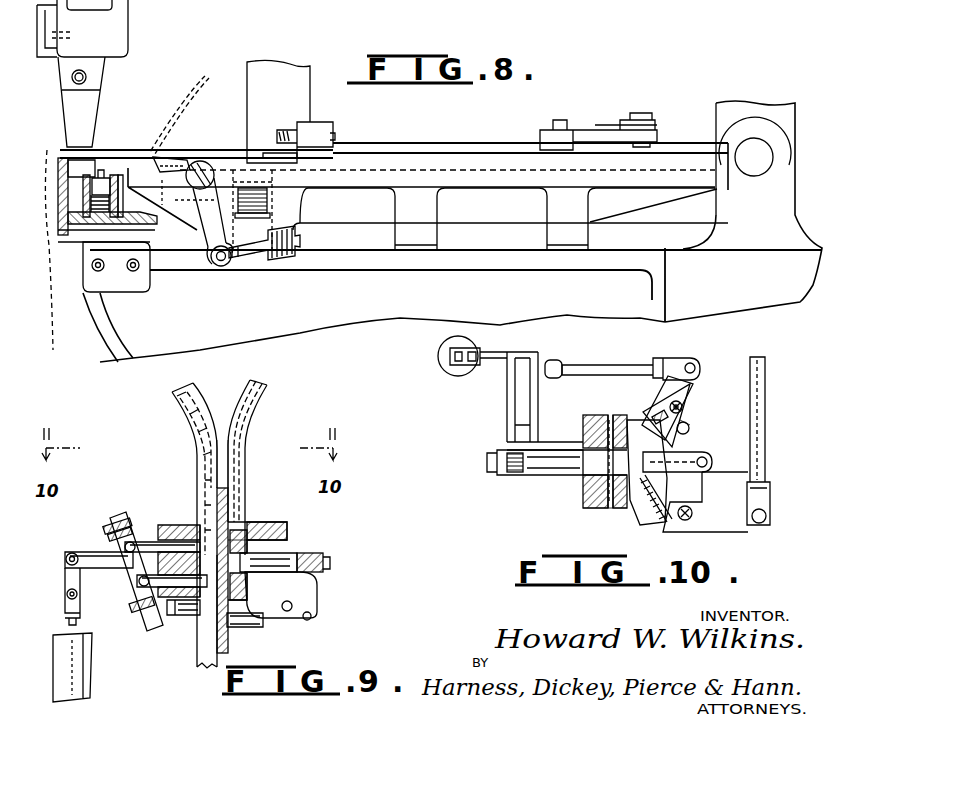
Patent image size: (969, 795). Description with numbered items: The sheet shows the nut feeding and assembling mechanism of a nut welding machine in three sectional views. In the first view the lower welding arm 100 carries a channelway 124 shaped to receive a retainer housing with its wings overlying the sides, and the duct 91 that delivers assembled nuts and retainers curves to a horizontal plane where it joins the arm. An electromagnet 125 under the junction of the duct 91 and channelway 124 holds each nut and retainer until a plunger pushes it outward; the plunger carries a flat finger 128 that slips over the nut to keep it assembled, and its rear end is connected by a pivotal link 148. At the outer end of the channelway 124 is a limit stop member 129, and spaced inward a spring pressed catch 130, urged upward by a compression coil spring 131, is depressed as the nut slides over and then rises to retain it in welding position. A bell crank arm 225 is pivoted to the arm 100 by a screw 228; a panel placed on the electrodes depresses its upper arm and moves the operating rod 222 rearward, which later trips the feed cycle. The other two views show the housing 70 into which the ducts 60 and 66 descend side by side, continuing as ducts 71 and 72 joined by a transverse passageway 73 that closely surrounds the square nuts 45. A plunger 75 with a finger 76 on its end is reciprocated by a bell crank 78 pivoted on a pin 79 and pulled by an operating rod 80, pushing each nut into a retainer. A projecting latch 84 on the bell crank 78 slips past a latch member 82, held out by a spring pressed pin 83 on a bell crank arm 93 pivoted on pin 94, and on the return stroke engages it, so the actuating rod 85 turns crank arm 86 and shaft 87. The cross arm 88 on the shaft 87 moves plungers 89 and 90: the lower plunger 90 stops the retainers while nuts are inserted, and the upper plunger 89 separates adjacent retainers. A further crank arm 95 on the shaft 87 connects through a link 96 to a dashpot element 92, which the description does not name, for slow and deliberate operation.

In FIG. 8, the limit stop member 129 is at (60, 157).
In FIG. 8, the spring pressed catch 130 is at (100, 160).
In FIG. 8, the channelway 124 is at (115, 160).
In FIG. 8, the screw 228 is at (195, 160).
In FIG. 8, the flat finger 128 is at (263, 155).
In FIG. 8, the duct 91 is at (310, 112).
In FIG. 9, the duct 91 is at (200, 640).
In FIG. 8, the pivotal link 148 is at (598, 130).
In FIG. 8, the electromagnet 125 is at (270, 212).
In FIG. 8, the compression coil spring 131 is at (88, 245).
In FIG. 8, the bell crank arm 225 is at (210, 262).
In FIG. 8, the operating rod 222 is at (288, 262).
In FIG. 8, the lower welding arm 100 is at (345, 218).
In FIG. 9, the duct 66 is at (188, 392).
In FIG. 9, the duct 60 is at (258, 413).
In FIG. 9, the square nut 45 is at (262, 388).
In FIG. 9, the transverse passageway 73 is at (228, 620).
In FIG. 9, the duct 72 is at (188, 522).
In FIG. 10, the duct 72 is at (590, 432).
In FIG. 9, the plunger 75 is at (310, 553).
In FIG. 10, the plunger 75 is at (700, 456).
In FIG. 9, the finger 76 is at (262, 590).
In FIG. 10, the finger 76 is at (612, 508).
In FIG. 9, the upper plunger 89 is at (137, 542).
In FIG. 9, the crank arm 95 is at (90, 552).
In FIG. 9, the link 96 is at (76, 578).
In FIG. 9, the paddle 92 is at (85, 680).
In FIG. 9, the lower plunger 90 is at (150, 628).
In FIG. 9, the cross arm 88 is at (112, 520).
In FIG. 9, the shaft 87 is at (132, 598).
In FIG. 9, the housing 70 is at (250, 542).
In FIG. 10, the housing 70 is at (660, 523).
In FIG. 9, the duct 71 is at (262, 548).
In FIG. 10, the duct 71 is at (611, 440).
In FIG. 10, the crank arm 86 is at (540, 372).
In FIG. 10, the actuating rod 85 is at (592, 368).
In FIG. 10, the spring pressed pin 83 is at (668, 398).
In FIG. 10, the latch member 82 is at (688, 425).
In FIG. 10, the bell crank arm 93 is at (684, 400).
In FIG. 10, the pin 94 is at (690, 412).
In FIG. 10, the cooperating latch 84 is at (707, 452).
In FIG. 10, the bell crank 78 is at (708, 508).
In FIG. 10, the pin 79 is at (690, 518).
In FIG. 10, the operating rod 80 is at (766, 450).